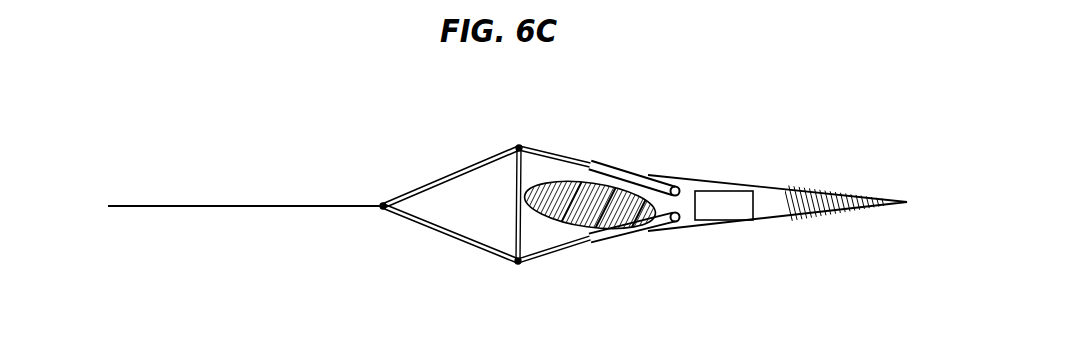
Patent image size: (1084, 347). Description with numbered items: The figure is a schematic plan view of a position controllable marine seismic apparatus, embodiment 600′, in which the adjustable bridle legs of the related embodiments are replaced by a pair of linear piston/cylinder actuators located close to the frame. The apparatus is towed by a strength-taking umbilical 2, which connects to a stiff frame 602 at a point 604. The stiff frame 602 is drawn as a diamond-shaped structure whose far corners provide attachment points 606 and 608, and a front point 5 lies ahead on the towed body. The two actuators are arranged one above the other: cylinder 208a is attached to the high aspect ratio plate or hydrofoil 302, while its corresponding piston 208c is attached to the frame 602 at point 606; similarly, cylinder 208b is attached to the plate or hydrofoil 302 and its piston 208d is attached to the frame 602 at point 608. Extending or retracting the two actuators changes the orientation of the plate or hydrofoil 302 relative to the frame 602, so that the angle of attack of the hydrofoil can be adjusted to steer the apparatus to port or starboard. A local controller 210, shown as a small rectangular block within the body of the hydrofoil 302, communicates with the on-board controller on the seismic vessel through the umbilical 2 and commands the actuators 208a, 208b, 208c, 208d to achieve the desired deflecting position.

The strength-taking umbilical 2 is at (142, 205).
The front point 5 is at (527, 203).
The embodiment of position controllable marine seismic apparatus 600′ is at (700, 151).
The stiff frame 602 is at (443, 179).
The point 604 is at (383, 209).
The point 606 is at (522, 146).
The point 608 is at (522, 265).
The cylinder 208a is at (628, 174).
The cylinder 208b is at (632, 233).
The piston 208c is at (566, 157).
The piston 208d is at (563, 248).
The local controller 210 is at (731, 200).
The high aspect ratio plate or hydrofoil 302 is at (800, 195).